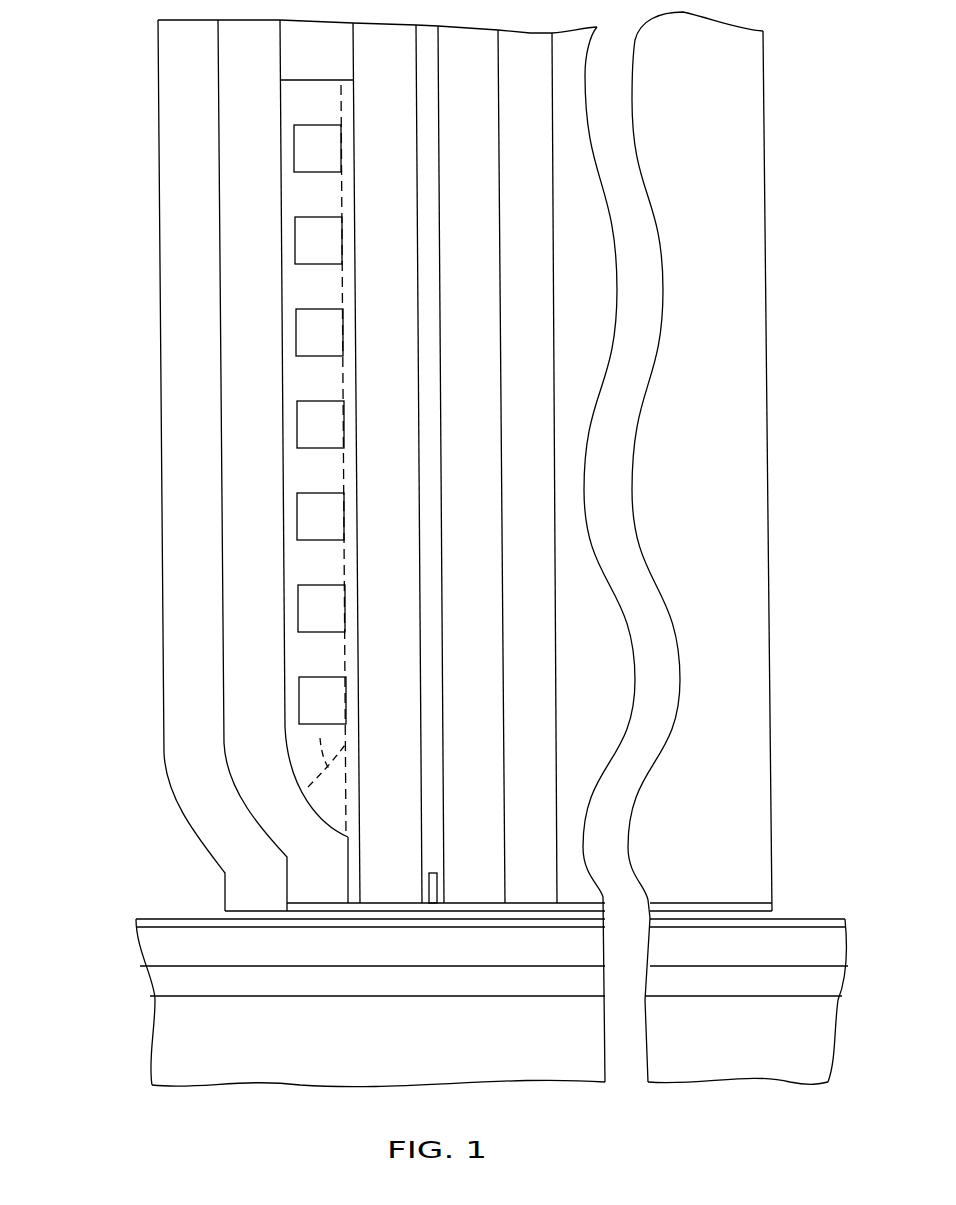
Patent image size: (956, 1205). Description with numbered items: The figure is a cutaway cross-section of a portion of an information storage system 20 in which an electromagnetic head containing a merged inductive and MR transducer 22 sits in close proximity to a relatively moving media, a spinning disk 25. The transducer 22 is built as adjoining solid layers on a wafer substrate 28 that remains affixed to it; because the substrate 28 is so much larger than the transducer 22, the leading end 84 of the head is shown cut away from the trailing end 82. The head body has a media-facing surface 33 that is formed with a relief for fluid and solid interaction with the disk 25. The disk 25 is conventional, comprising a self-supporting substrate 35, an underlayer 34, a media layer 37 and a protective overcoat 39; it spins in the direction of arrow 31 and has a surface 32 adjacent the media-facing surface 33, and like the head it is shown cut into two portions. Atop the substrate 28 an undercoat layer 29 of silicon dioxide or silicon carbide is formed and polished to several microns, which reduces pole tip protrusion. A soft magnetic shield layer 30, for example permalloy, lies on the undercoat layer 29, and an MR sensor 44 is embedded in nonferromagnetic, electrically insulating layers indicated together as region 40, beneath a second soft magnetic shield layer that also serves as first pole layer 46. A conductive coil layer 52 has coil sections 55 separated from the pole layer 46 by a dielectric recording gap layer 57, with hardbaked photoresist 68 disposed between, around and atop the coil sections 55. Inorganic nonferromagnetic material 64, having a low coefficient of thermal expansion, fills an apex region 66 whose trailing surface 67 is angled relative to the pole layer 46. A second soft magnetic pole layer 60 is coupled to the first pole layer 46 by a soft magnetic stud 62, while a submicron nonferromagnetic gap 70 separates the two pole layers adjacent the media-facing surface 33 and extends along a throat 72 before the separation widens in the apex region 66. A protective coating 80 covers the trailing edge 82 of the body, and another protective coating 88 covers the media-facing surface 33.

The information storage system 20 is at (128, 82).
The merged inductive and MR transducer 22 is at (130, 557).
The spinning disk 25 is at (128, 997).
The wafer substrate 28 is at (578, 699).
The undercoat layer 29 is at (515, 393).
The shield layer 30 is at (458, 583).
The arrow 31 is at (180, 1058).
The surface 32 is at (165, 919).
The media-facing surface 33 is at (287, 913).
The underlayer 34 is at (462, 986).
The self-supporting substrate 35 is at (351, 1045).
The media layer 37 is at (558, 958).
The protective overcoat 39 is at (227, 930).
The region 40 is at (428, 707).
The MR sensor 44 is at (437, 890).
The second soft magnetic shield layer / first pole layer 46 is at (376, 583).
The coil layer 52 is at (318, 112).
The coil sections 55 is at (343, 334).
The recording gap layer 57 is at (347, 643).
The second soft magnetic pole layer 60 is at (237, 398).
The soft magnetic stud 62 is at (283, 45).
The inorganic nonferromagnetic material 64 is at (317, 757).
The apex region 66 is at (362, 767).
The trailing surface 67 is at (322, 817).
The hardbaked photoresist 68 is at (300, 483).
The nonferromagnetic gap 70 is at (354, 913).
The throat 72 is at (362, 838).
The protective coating 80 is at (178, 535).
The trailing end 82 is at (160, 418).
The leading end 84 is at (768, 413).
The protective coating 88 is at (532, 900).